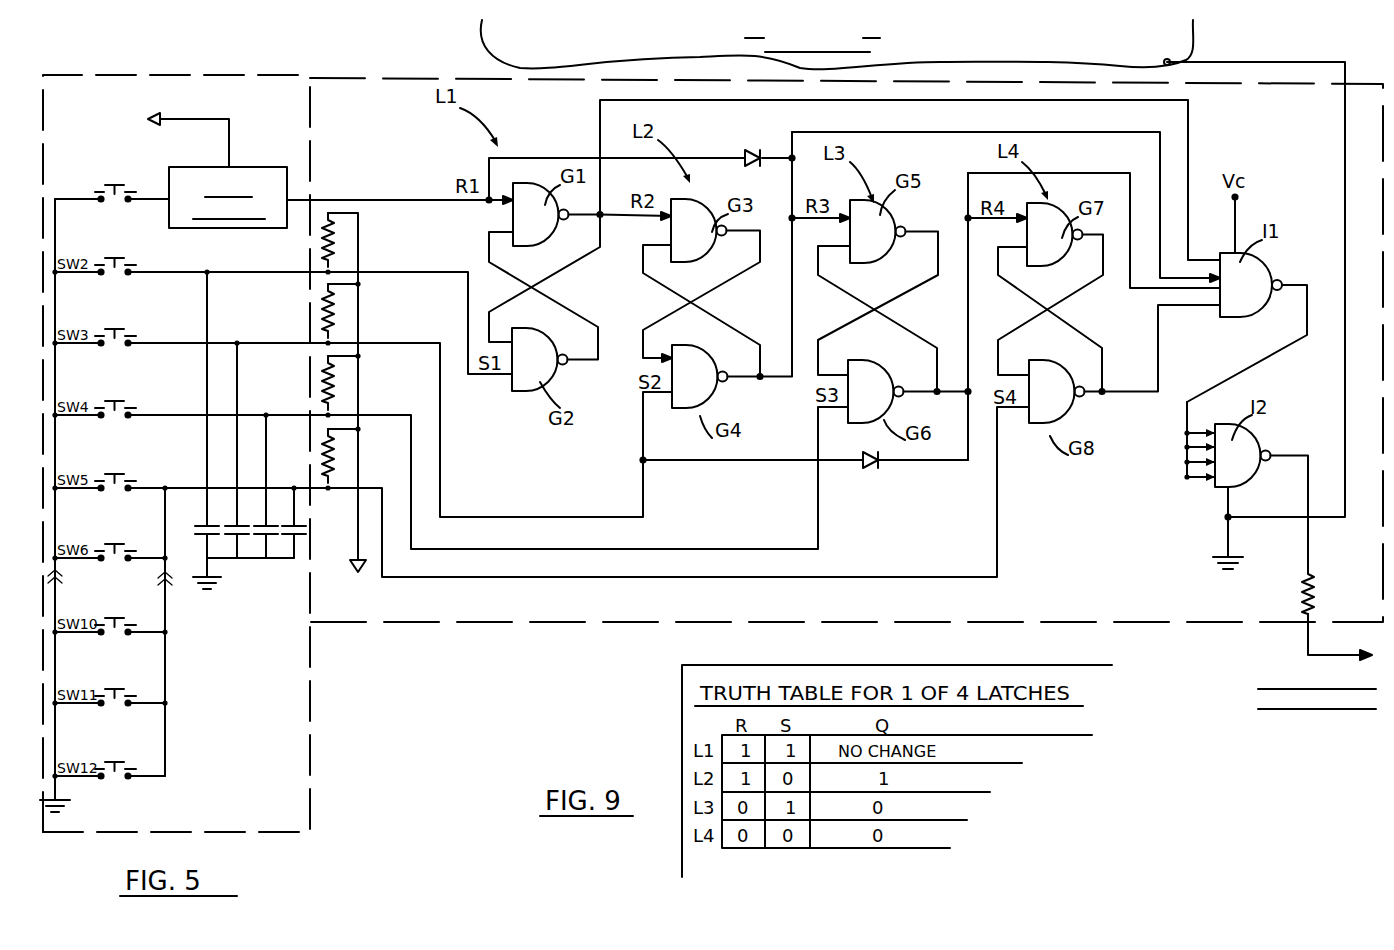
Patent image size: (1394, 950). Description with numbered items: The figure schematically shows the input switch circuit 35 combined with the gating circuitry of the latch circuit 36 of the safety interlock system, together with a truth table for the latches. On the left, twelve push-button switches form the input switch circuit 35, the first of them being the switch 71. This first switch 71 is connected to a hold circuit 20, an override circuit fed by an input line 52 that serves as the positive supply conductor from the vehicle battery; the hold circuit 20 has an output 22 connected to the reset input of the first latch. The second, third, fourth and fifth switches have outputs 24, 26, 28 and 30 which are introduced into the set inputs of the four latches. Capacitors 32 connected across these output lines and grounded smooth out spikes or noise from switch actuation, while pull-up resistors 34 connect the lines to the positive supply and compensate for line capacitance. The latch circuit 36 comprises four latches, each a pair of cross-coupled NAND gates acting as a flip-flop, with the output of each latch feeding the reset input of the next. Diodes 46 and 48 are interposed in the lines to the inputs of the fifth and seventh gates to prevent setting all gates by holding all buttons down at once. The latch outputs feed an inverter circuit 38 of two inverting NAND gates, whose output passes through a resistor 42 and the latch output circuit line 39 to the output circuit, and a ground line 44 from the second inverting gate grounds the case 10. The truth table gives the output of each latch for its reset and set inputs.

The case 10 is at (1168, 44).
The hold circuit 20 is at (265, 175).
The output 22 is at (340, 197).
The output 24 is at (172, 270).
The output 26 is at (160, 341).
The output 28 is at (162, 413).
The output 30 is at (185, 486).
The capacitors 32 is at (297, 536).
The resistors 34 is at (323, 226).
The input switch circuit 35 is at (197, 88).
The latch circuit 36 is at (417, 92).
The inverter circuit 38 is at (1292, 268).
The latch output circuit line 39 is at (1330, 655).
The resistor 42 is at (1305, 596).
The ground line 44 is at (1345, 121).
The diode 46 is at (745, 157).
The diode 48 is at (873, 467).
The input line 52 is at (212, 104).
The switch SW1 71 is at (148, 192).